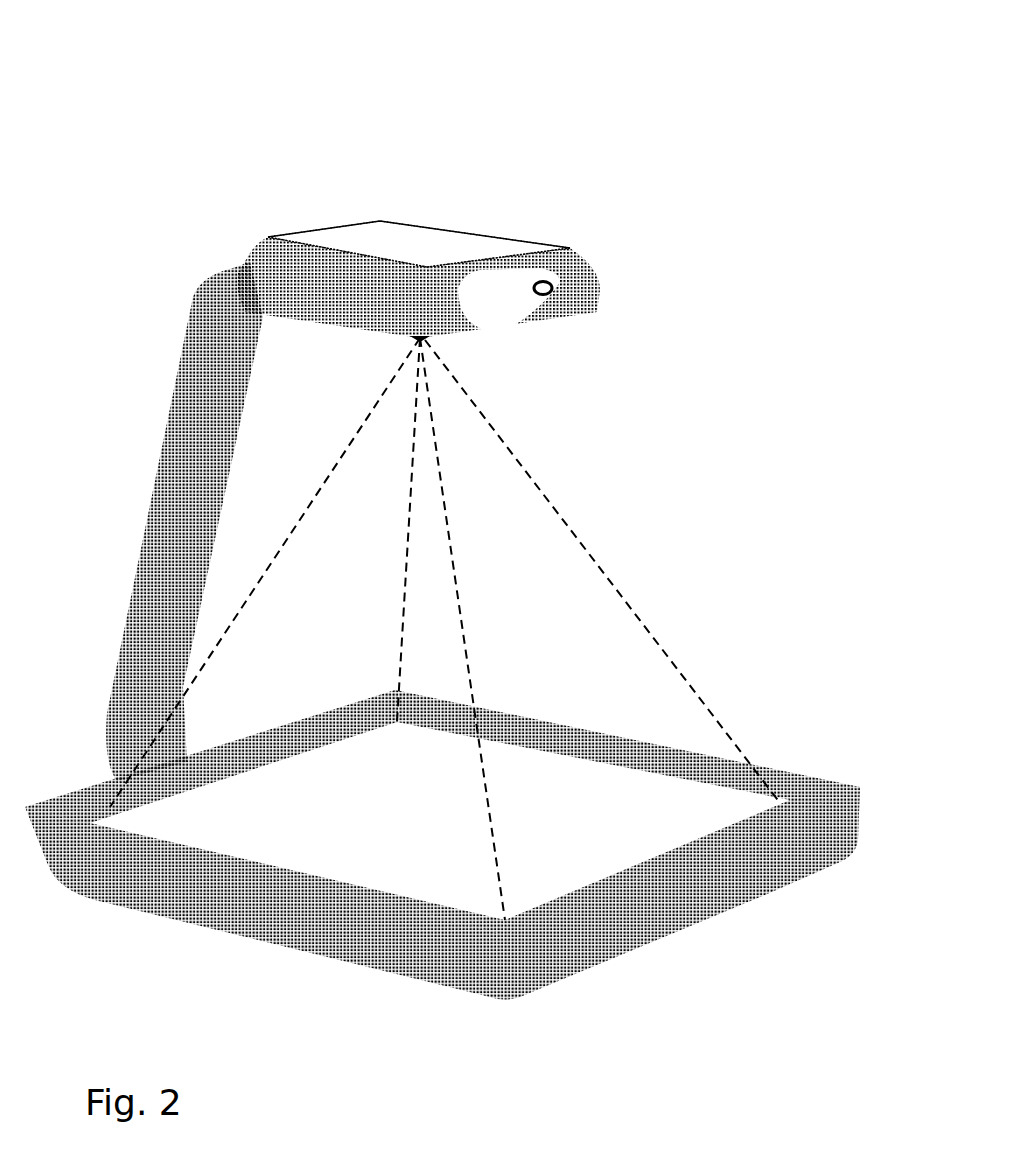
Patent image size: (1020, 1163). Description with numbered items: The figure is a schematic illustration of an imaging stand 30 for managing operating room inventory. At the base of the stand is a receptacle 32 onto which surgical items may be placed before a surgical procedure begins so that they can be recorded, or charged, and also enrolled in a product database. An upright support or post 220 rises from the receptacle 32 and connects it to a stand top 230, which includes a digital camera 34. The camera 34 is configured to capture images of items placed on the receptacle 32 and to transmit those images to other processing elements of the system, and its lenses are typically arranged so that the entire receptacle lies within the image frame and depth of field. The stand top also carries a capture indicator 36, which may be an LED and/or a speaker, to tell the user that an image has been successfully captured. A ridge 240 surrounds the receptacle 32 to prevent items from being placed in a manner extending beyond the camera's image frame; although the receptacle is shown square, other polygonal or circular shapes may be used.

The imaging stand 30 is at (240, 86).
The receptacle 32 is at (727, 815).
The digital camera 34 is at (417, 340).
The capture indicator 36 is at (553, 287).
The upright support or post 220 is at (170, 458).
The stand top 230 is at (383, 232).
The ridge 240 is at (535, 718).